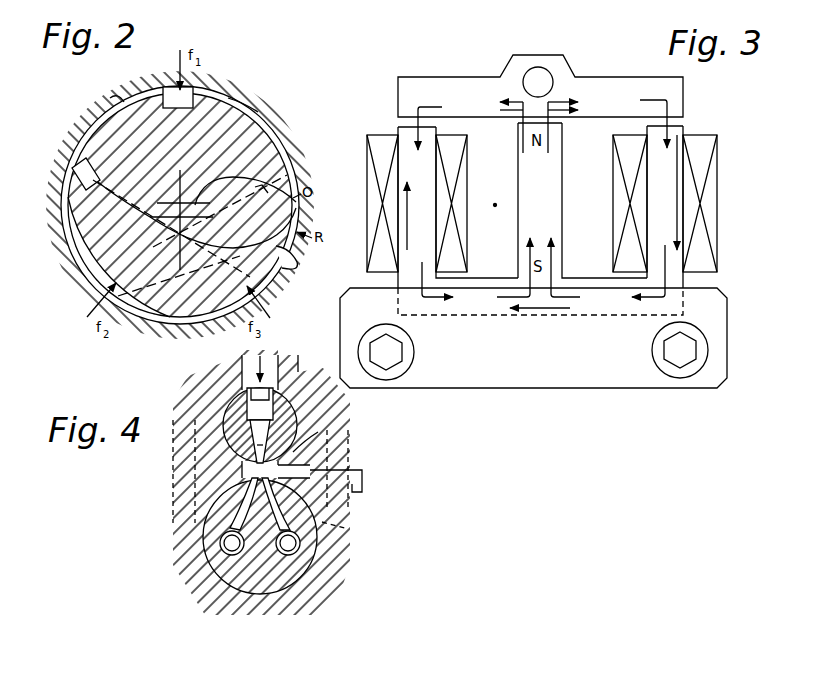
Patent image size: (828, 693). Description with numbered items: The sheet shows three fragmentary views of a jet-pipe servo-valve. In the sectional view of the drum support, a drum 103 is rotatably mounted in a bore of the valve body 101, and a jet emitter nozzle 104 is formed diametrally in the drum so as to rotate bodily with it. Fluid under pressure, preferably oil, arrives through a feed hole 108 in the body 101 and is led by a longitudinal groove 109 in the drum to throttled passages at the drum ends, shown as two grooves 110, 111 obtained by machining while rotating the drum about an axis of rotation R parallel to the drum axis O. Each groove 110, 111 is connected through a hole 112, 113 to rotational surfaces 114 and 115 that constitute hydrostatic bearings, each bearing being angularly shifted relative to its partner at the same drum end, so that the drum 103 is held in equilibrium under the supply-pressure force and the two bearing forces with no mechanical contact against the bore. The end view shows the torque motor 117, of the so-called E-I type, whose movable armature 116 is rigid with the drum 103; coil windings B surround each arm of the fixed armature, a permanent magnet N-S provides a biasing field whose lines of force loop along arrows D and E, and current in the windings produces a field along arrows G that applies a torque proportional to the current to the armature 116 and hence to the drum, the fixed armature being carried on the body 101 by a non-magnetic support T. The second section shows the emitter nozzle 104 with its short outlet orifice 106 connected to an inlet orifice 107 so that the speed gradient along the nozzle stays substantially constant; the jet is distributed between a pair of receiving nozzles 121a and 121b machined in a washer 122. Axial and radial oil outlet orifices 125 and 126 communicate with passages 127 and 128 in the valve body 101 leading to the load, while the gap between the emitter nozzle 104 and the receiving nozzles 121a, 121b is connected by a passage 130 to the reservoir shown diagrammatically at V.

In FIG. 2, the body 101 is at (74, 178).
In FIG. 2, the drum 103 is at (84, 210).
In FIG. 3, the drum 103 is at (540, 80).
In FIG. 4, the drum 103 is at (228, 432).
In FIG. 4, the jet emitter nozzle 104 is at (296, 420).
In FIG. 4, the outlet orifice 106 is at (257, 461).
In FIG. 4, the inlet orifice 107 is at (294, 378).
In FIG. 4, the feed hole 108 is at (240, 373).
In FIG. 2, the longitudinal groove 109 is at (204, 90).
In FIG. 2, the groove 110 is at (259, 113).
In FIG. 2, the groove 111 is at (118, 102).
In FIG. 2, the hole 112 is at (276, 167).
In FIG. 2, the hole 113 is at (80, 160).
In FIG. 2, the rotational surface 114 is at (90, 258).
In FIG. 2, the rotational surface 115 is at (283, 260).
In FIG. 3, the movable armature 116 is at (616, 88).
In FIG. 3, the torque motor 117 is at (499, 193).
In FIG. 4, the receiving nozzle 121a is at (205, 506).
In FIG. 4, the receiving nozzle 121b is at (305, 506).
In FIG. 4, the washer 122 is at (290, 580).
In FIG. 4, the axial oil outlet orifice 125 is at (308, 560).
In FIG. 4, the radial oil outlet orifice 126 is at (343, 526).
In FIG. 4, the passage 127 is at (340, 453).
In FIG. 4, the passage 128 is at (173, 484).
In FIG. 4, the passage 130 is at (286, 428).